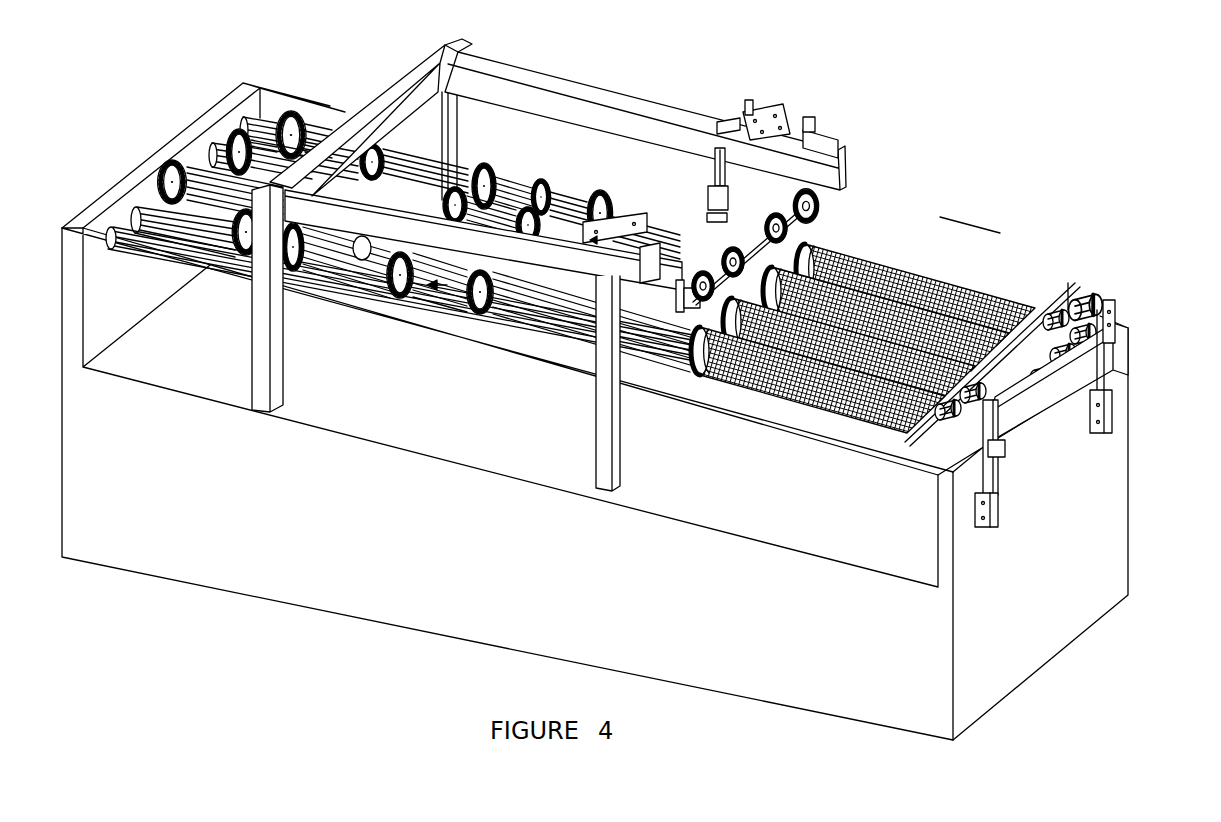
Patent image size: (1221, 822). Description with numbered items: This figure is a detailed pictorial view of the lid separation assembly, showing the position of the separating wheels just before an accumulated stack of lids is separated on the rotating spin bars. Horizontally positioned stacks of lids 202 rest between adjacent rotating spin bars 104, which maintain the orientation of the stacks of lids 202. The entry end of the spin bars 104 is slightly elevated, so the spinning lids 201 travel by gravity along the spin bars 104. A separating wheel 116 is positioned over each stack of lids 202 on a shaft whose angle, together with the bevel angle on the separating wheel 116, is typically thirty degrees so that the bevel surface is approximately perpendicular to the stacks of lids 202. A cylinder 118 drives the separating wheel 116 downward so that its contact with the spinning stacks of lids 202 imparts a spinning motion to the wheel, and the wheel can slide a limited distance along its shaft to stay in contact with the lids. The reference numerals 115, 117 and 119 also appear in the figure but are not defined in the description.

The rotating spin bars 104 is at (400, 305).
The drive shaft with gears 115 is at (747, 244).
The separating wheel 116 is at (845, 190).
The mounting bracket 117 is at (843, 152).
The cylinder 118 is at (603, 276).
The rail end bracket 119 is at (688, 312).
The spinning lids 201 is at (493, 176).
The stacks of lids 202 is at (957, 282).